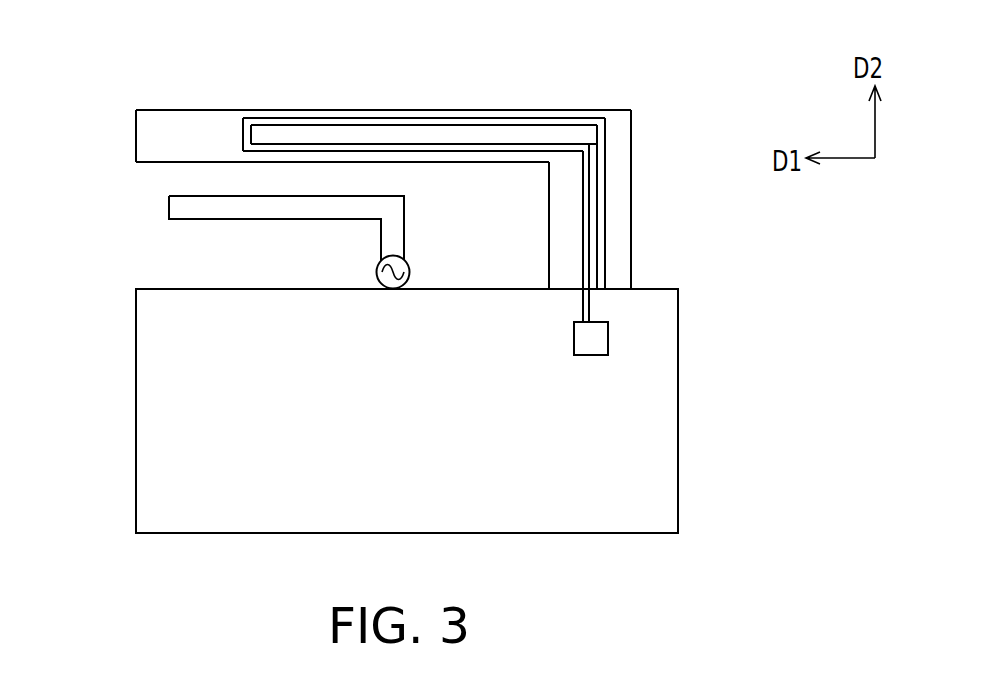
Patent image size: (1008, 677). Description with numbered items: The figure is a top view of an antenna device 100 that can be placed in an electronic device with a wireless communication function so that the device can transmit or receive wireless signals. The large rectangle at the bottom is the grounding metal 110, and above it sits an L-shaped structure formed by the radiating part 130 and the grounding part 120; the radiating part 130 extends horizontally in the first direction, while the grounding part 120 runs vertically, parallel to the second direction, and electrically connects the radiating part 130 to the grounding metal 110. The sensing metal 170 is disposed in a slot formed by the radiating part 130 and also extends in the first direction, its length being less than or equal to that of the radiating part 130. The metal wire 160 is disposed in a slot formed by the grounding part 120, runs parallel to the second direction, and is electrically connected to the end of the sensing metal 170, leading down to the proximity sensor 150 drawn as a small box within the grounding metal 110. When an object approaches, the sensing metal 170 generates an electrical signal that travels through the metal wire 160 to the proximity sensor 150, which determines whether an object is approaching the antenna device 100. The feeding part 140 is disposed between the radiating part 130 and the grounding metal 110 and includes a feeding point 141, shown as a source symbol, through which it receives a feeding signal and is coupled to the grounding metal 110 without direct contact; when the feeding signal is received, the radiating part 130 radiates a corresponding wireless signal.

The antenna device 100 is at (799, 574).
The grounding metal 110 is at (134, 427).
The grounding part 120 is at (622, 243).
The radiating part 130 is at (148, 137).
The feeding part 140 is at (169, 207).
The feeding point 141 is at (378, 262).
The proximity sensor 150 is at (608, 338).
The metal wire 160 is at (593, 176).
The sensing metal 170 is at (521, 135).